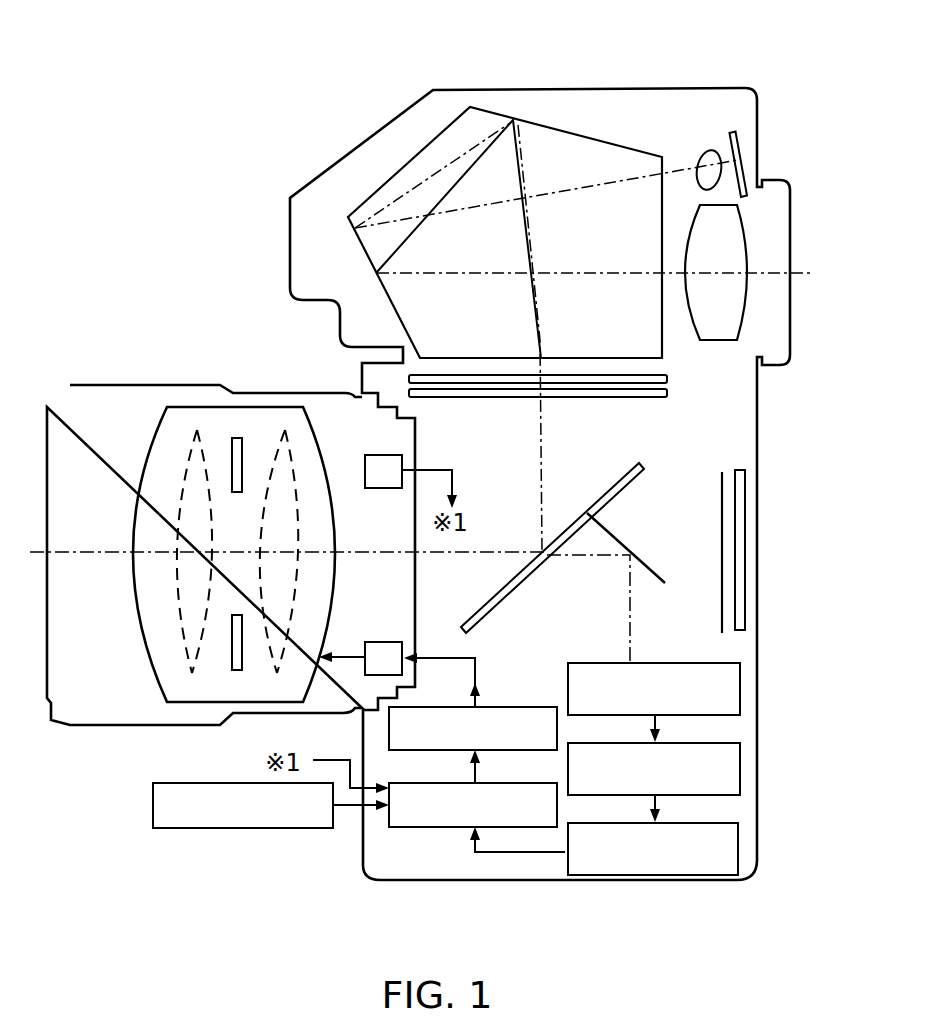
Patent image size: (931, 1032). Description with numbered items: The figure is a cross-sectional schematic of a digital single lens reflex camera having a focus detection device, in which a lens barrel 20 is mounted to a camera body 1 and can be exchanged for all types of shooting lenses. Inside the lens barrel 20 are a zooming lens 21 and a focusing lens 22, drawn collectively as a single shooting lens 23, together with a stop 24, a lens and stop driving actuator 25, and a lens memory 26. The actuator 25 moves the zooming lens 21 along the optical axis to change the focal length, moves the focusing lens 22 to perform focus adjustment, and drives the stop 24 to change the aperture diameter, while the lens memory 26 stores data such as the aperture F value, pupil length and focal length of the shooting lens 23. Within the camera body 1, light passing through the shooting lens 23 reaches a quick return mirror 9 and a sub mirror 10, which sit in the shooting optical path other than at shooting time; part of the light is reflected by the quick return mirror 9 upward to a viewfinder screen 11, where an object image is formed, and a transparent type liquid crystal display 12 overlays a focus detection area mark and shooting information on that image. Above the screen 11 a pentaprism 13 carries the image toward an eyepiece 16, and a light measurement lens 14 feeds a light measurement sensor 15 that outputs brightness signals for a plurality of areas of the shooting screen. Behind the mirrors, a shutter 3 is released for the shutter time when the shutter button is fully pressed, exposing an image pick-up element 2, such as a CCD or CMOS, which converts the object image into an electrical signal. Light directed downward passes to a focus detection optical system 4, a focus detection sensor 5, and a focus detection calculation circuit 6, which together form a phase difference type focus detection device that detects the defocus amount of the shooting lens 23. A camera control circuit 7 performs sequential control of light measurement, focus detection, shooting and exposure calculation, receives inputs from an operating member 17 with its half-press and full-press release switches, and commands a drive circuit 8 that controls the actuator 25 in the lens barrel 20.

The camera body 1 is at (562, 86).
The image pick-up element 2 is at (745, 513).
The shutter 3 is at (725, 470).
The focus detection optical system 4 is at (740, 697).
The focus detection sensor 5 is at (740, 772).
The focus detection calculation circuit 6 is at (738, 848).
The camera control circuit 7 is at (432, 828).
The drive circuit 8 is at (505, 705).
The quick return mirror 9 is at (627, 470).
The sub mirror 10 is at (652, 567).
The viewfinder screen 11 is at (667, 394).
The transparent type liquid crystal display 12 is at (667, 376).
The pentaprism 13 is at (605, 138).
The light measurement lens 14 is at (706, 150).
The light measurement sensor 15 is at (745, 152).
The eyepiece 16 is at (747, 253).
The operating member 17 is at (258, 828).
The lens barrel 20 is at (117, 387).
The zooming lens 21 is at (187, 445).
The focusing lens 22 is at (287, 437).
The shooting lens 23 is at (197, 408).
The stop 24 is at (237, 437).
The lens and stop driving actuator 25 is at (380, 640).
The lens memory 26 is at (382, 453).